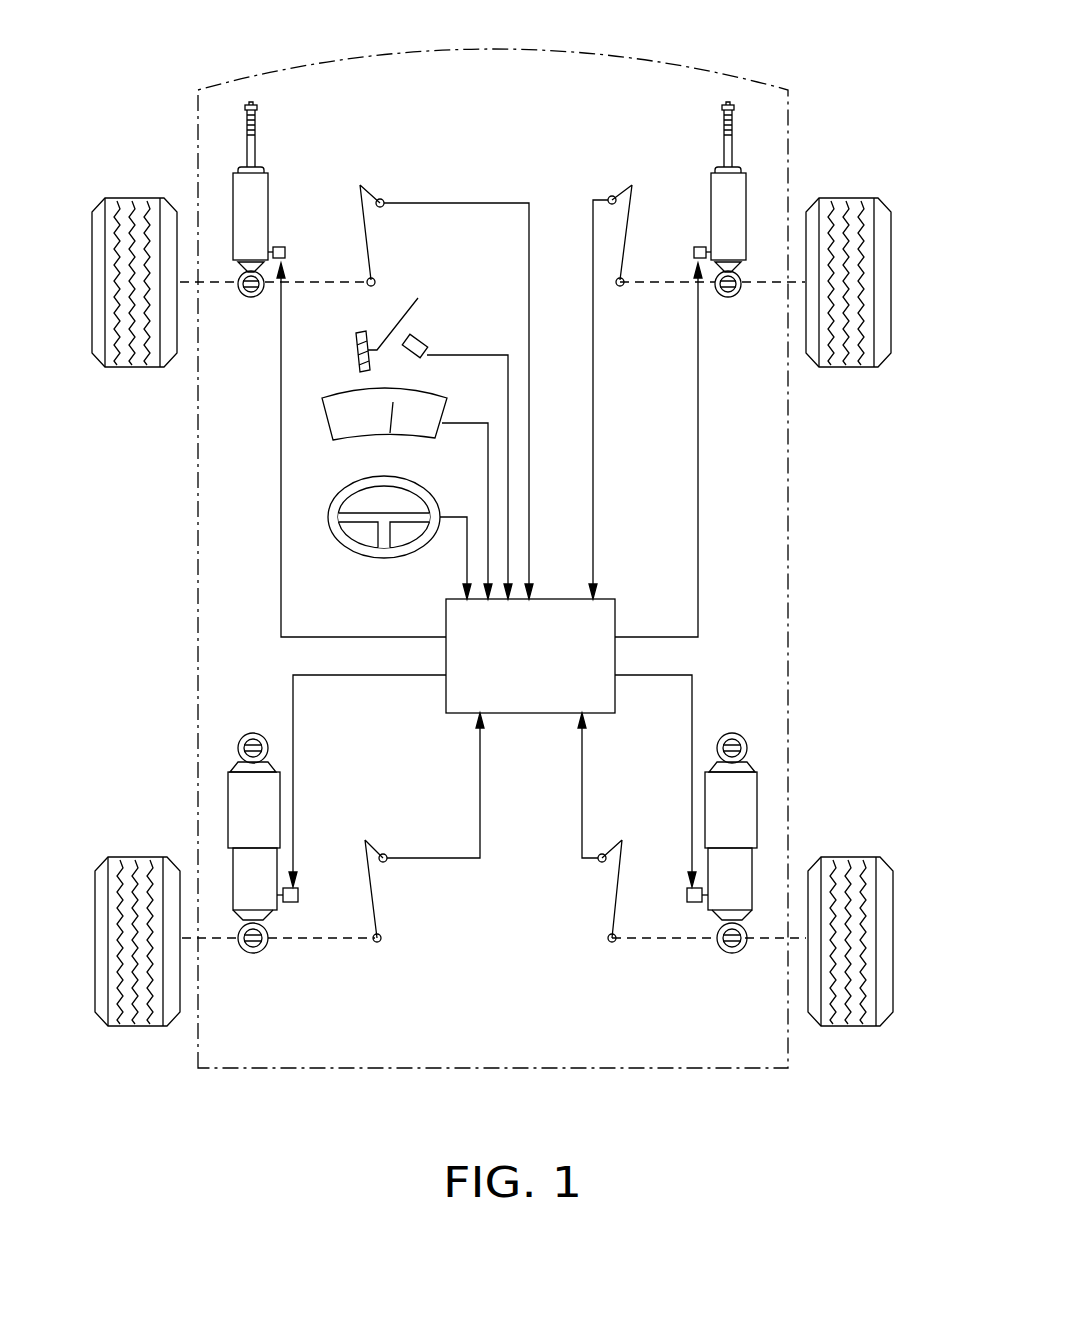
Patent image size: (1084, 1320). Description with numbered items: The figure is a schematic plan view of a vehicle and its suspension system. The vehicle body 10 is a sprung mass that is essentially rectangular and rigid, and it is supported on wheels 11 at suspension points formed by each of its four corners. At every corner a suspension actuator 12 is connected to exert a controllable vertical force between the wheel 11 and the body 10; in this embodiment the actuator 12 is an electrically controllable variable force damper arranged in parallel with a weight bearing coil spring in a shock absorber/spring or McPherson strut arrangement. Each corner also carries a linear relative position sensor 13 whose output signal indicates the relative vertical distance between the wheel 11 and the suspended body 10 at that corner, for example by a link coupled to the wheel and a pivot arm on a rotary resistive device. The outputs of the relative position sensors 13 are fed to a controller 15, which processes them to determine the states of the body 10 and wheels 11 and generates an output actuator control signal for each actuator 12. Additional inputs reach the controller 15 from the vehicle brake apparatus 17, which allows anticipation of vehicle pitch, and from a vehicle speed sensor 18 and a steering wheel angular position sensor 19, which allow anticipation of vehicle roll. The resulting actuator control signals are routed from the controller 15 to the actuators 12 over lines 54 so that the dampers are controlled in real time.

The vehicle body 10 is at (247, 72).
The wheels 11 is at (140, 206).
The suspension actuator 12 is at (260, 235).
The linear relative position sensor 13 is at (370, 232).
The controller 15 is at (605, 626).
The vehicle brake apparatus 17 is at (355, 360).
The vehicle speed sensor 18 is at (433, 403).
The steering wheel angular position sensor 19 is at (333, 505).
The lines 54 is at (281, 548).